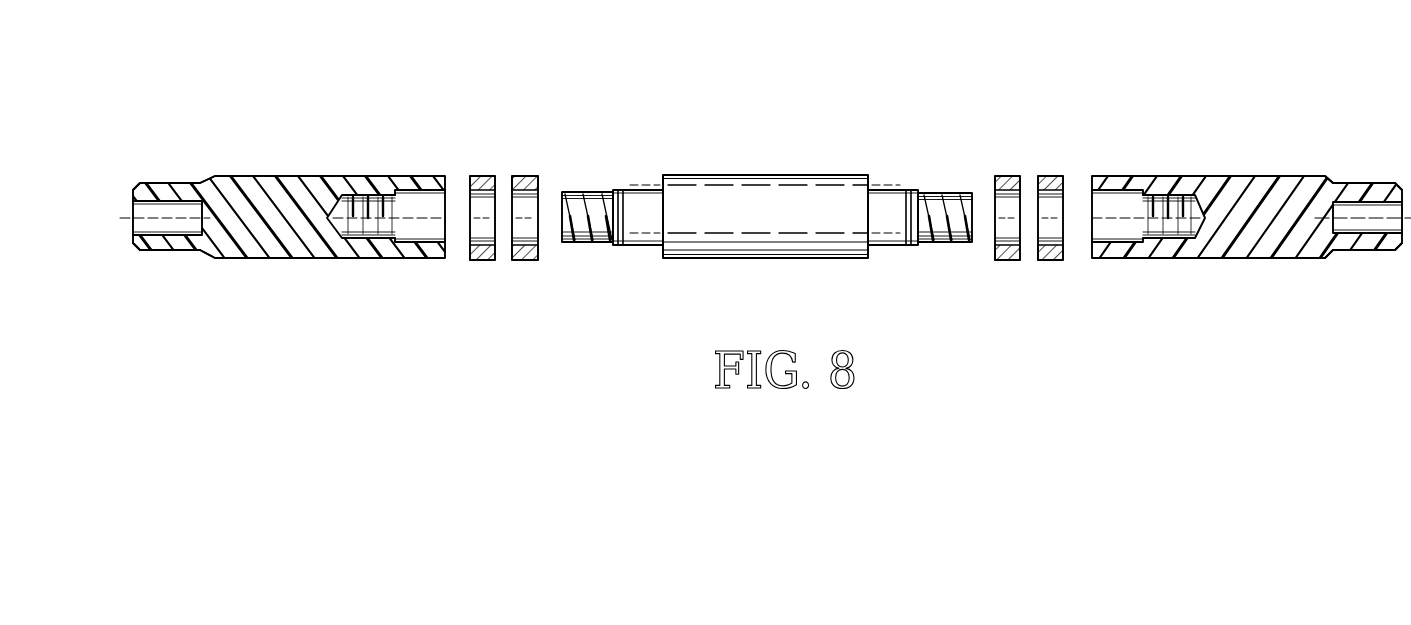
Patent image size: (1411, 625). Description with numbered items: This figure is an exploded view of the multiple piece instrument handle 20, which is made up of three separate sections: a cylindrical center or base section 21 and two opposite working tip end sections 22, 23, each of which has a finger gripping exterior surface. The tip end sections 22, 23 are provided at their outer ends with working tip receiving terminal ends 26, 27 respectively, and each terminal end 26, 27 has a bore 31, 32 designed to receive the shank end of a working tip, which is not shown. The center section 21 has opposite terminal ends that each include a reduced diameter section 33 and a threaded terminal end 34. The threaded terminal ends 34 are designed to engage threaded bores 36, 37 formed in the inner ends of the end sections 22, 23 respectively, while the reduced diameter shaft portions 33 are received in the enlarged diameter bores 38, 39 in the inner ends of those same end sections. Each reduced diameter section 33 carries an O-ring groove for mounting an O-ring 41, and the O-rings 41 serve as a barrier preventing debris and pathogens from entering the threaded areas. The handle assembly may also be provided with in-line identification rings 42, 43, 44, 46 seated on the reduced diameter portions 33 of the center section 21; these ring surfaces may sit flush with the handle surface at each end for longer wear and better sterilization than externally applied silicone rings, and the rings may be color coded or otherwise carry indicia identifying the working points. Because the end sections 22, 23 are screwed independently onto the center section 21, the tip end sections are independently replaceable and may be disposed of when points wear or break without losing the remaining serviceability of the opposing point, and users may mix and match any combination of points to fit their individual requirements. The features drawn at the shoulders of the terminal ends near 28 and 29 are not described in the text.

The handle 20 is at (811, 96).
The center or base section 21 is at (780, 175).
The tip end section 22 is at (330, 176).
The tip end section 23 is at (1190, 176).
The working tip receiving terminal end 26 is at (178, 183).
The working tip receiving terminal end 27 is at (1363, 183).
The left shoulder 28 is at (193, 258).
The right shoulder 29 is at (1346, 258).
The bore 31 is at (152, 238).
The bore 32 is at (1386, 235).
The reduced diameter section 33 is at (647, 190).
The threaded terminal end 34 is at (584, 192).
The threaded bore 36 is at (373, 235).
The threaded bore 37 is at (1170, 235).
The enlarged diameter bore 38 is at (440, 245).
The enlarged diameter bore 39 is at (1114, 242).
The O-ring 41 is at (620, 245).
The identification ring 42 is at (487, 176).
The identification ring 43 is at (529, 260).
The identification ring 44 is at (1013, 176).
The identification ring 46 is at (1051, 260).